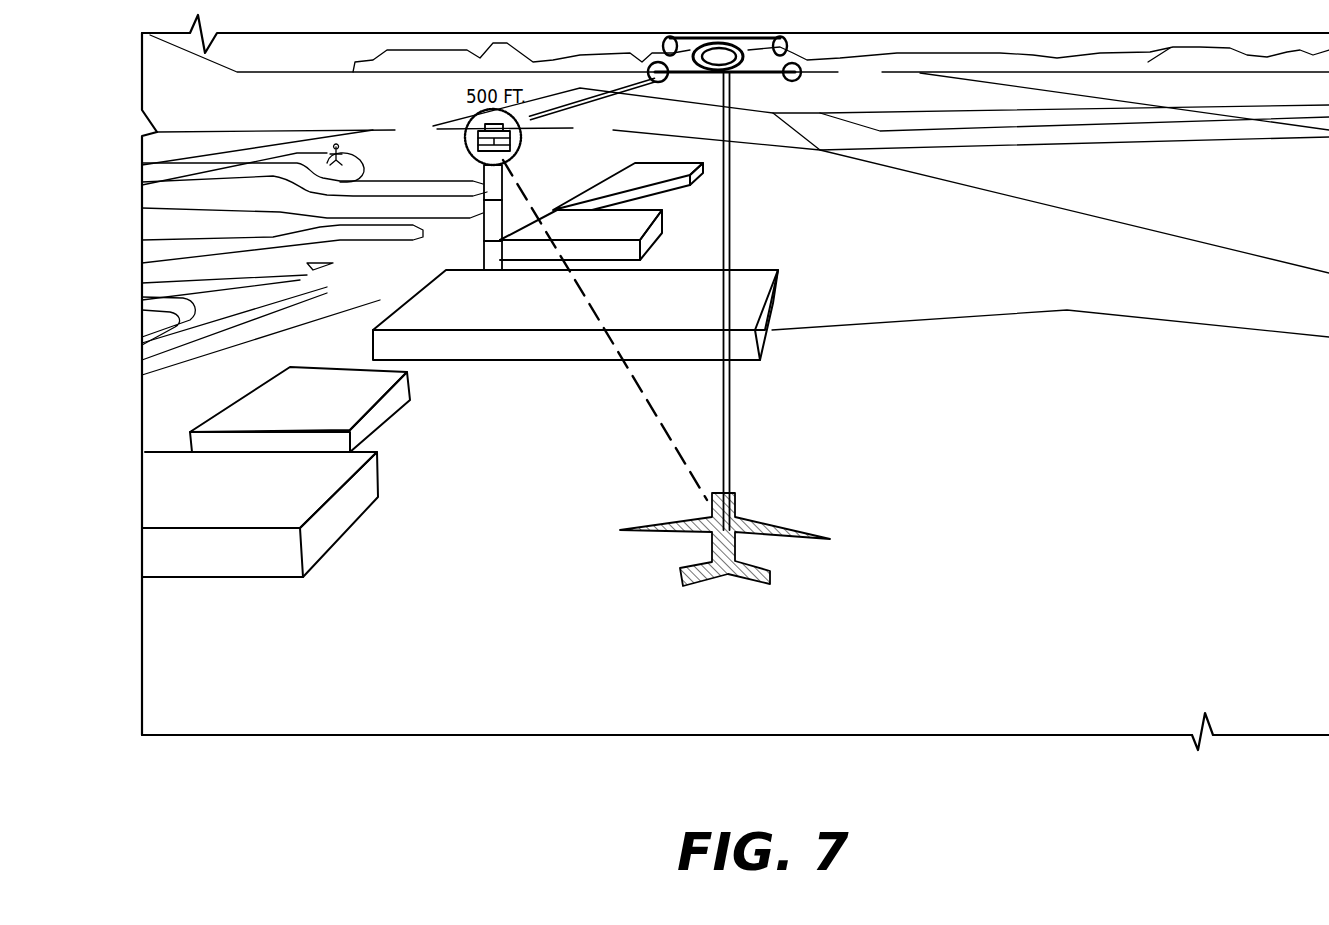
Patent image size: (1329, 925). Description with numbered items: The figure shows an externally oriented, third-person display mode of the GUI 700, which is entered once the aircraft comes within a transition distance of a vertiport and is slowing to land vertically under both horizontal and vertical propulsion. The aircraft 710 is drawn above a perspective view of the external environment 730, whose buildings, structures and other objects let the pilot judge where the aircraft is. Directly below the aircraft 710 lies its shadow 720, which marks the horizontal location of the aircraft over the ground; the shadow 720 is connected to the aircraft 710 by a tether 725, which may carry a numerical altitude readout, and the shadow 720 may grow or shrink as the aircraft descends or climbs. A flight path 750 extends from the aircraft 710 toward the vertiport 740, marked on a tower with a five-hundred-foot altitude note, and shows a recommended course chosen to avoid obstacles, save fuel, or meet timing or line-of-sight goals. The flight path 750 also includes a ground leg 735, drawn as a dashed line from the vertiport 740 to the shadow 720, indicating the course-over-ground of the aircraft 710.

The GUI 700 is at (289, 679).
The aircraft 710 is at (804, 79).
The shadow 720 is at (826, 489).
The tether 725 is at (735, 376).
The external environment 730 is at (373, 360).
The ground leg 735 is at (628, 378).
The vertiport 740 is at (432, 135).
The flight path 750 is at (608, 150).